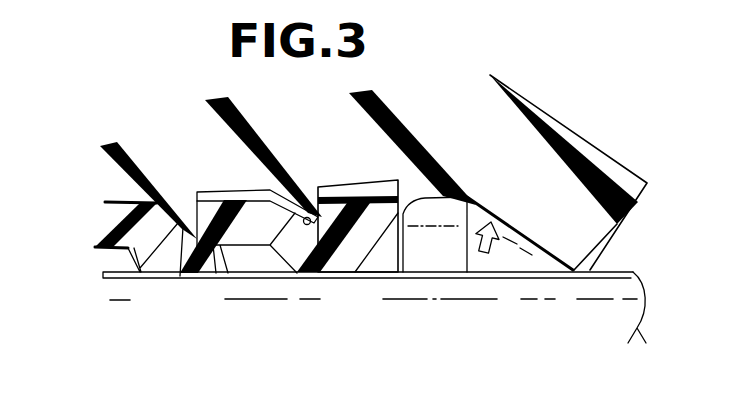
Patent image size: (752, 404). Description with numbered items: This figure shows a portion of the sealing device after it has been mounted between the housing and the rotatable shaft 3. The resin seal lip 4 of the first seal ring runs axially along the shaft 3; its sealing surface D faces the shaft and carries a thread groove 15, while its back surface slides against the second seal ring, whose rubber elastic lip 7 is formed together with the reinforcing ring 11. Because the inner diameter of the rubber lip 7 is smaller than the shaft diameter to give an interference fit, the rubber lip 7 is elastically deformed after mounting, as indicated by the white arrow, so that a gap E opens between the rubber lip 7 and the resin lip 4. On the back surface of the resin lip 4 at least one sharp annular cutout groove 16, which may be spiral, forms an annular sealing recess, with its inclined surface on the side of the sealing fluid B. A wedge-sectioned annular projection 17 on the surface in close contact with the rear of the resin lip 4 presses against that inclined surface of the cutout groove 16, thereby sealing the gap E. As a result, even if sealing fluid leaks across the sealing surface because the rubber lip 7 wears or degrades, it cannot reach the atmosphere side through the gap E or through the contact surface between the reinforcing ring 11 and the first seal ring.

The rotatable shaft 3 is at (620, 287).
The resin seal lip 4 is at (357, 264).
The rubber elastic lip 7 is at (540, 150).
The reinforcing ring 11 is at (103, 278).
The thread groove 15 is at (130, 278).
The annular cutout groove 16 is at (322, 306).
The annular projection 17 is at (305, 206).
The sealing surface D is at (296, 277).
The gap E is at (359, 195).
The sealing fluid side B is at (664, 132).